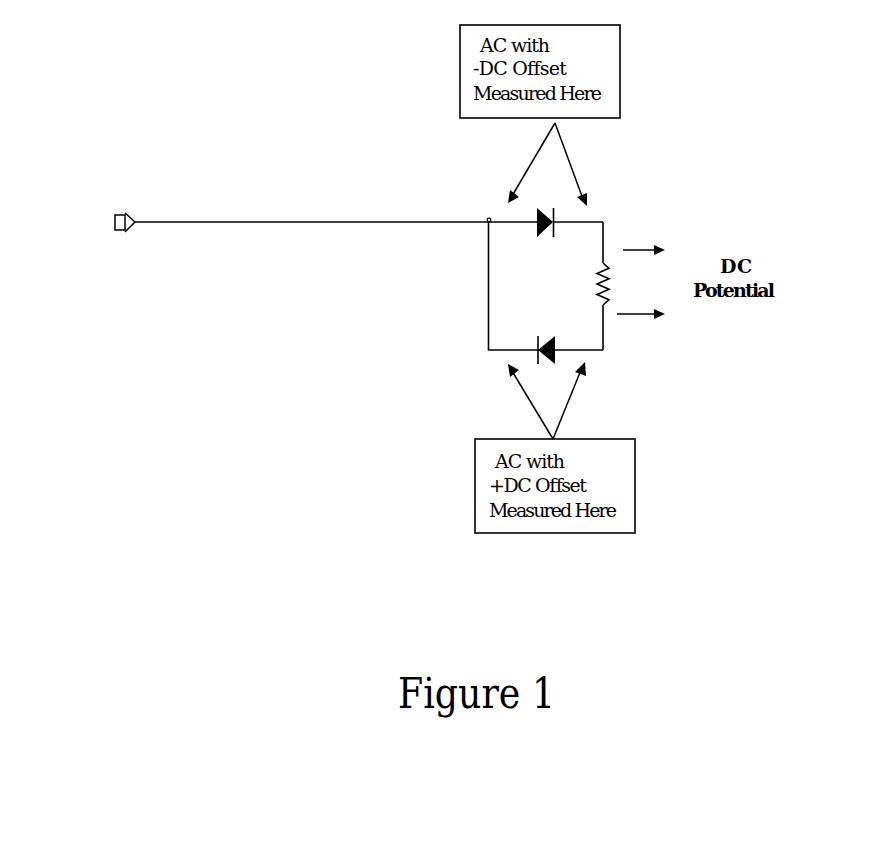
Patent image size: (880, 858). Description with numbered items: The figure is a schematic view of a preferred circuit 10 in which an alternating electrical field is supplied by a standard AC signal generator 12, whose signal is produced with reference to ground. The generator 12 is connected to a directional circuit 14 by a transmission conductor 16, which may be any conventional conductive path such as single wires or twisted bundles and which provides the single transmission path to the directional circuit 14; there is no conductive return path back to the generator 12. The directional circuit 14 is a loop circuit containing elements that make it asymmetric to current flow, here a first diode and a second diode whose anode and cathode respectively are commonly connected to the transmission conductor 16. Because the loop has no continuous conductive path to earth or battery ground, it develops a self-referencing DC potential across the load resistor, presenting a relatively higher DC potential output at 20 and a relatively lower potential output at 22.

The circuit 10 is at (290, 410).
The generator 12 is at (122, 200).
The directional circuit 14 is at (600, 217).
The transmission conductor 16 is at (300, 222).
The relatively higher DC potential output 20 is at (603, 240).
The relatively lower potential output 22 is at (603, 332).